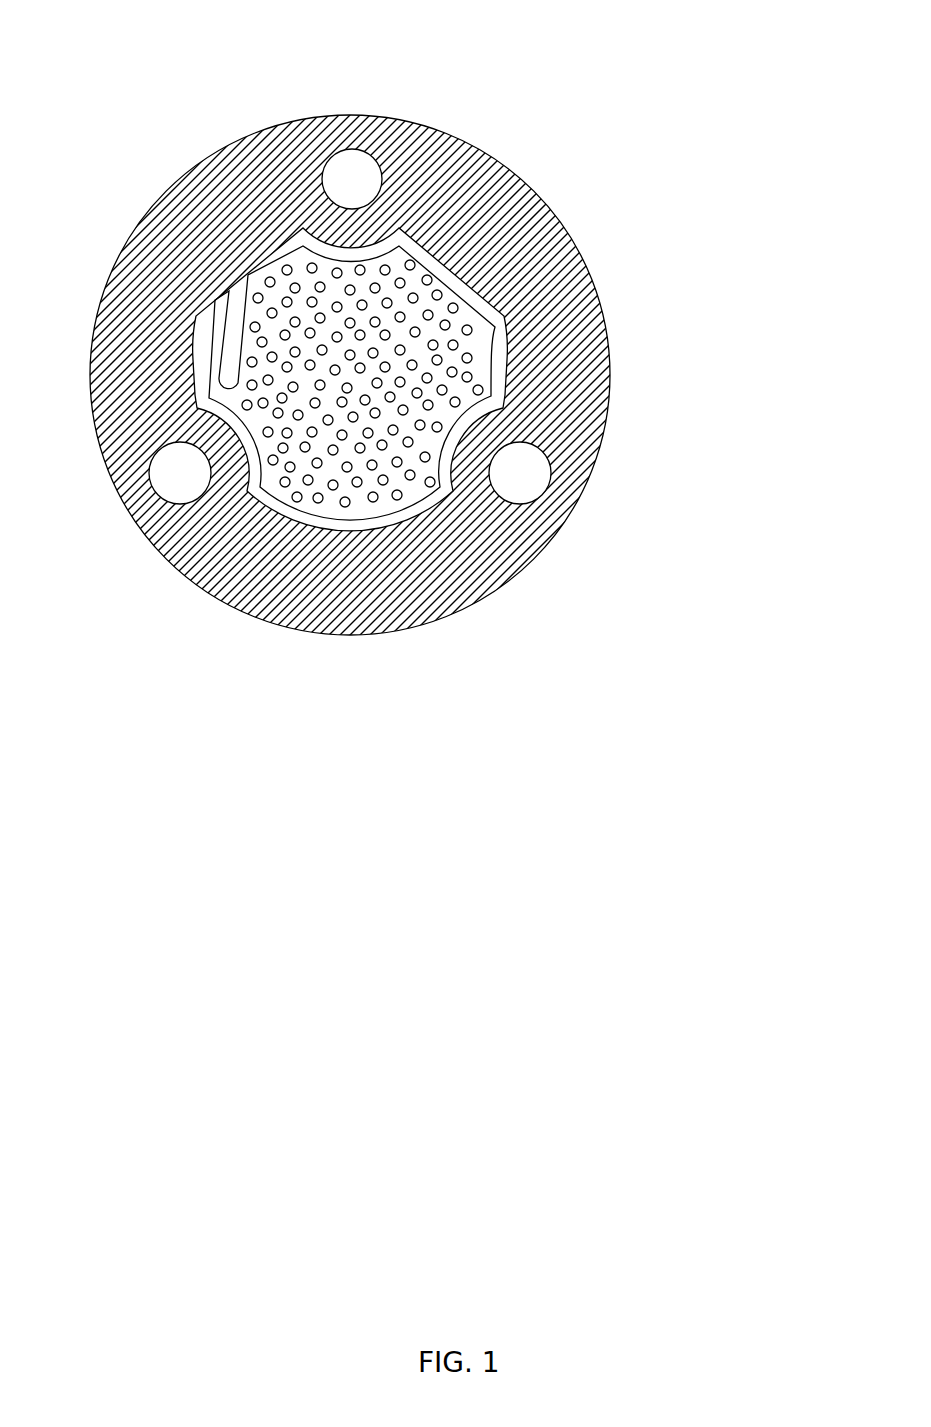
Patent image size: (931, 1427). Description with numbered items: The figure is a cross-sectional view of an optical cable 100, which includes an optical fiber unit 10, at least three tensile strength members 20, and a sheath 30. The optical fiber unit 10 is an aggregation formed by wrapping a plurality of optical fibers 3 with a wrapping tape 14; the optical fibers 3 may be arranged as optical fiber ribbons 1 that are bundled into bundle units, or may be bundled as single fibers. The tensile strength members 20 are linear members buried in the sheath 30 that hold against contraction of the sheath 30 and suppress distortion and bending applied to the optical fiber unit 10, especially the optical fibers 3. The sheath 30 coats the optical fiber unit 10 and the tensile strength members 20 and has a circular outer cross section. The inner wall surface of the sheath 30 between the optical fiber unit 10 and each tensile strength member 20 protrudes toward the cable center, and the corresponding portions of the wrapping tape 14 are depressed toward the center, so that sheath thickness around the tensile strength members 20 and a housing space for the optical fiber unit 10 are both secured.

The optical cable 100 is at (465, 350).
The sheath 30 is at (524, 186).
The tensile strength members 20 is at (352, 164).
The optical fiber unit 10 is at (505, 379).
The wrapping tape 14 is at (497, 348).
The optical fibers 3 is at (502, 383).
The optical fiber ribbons 1 is at (442, 294).